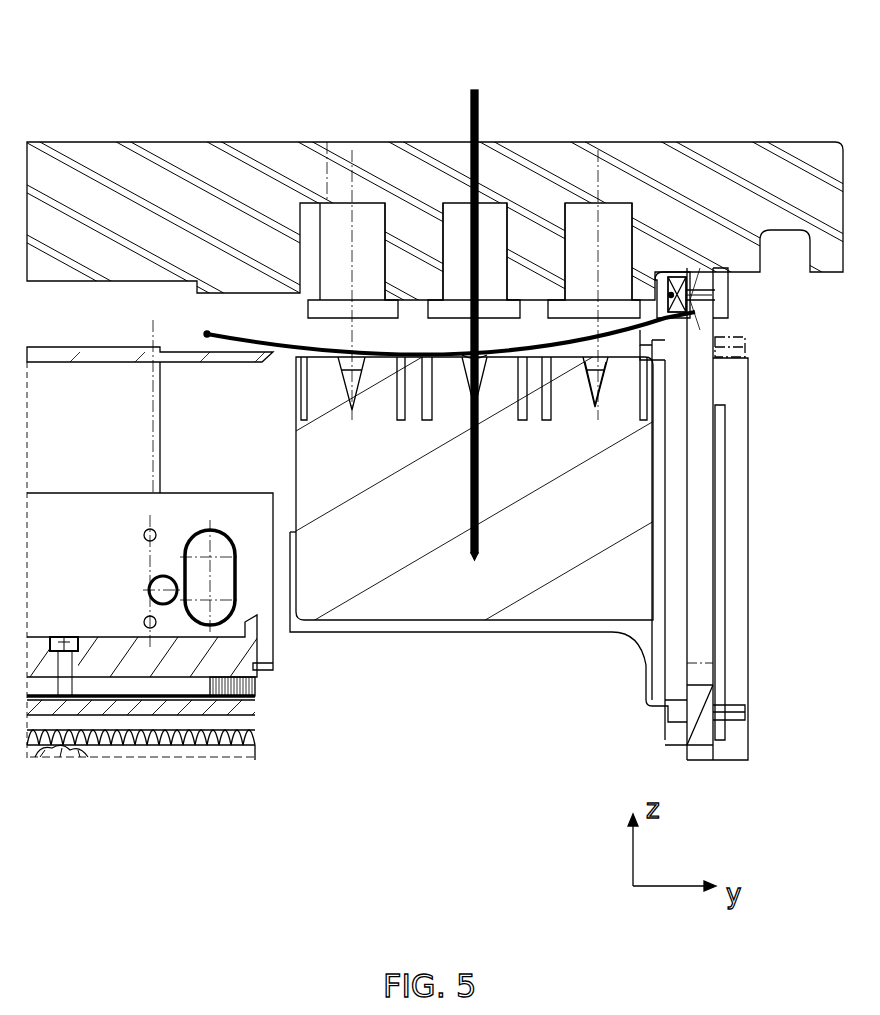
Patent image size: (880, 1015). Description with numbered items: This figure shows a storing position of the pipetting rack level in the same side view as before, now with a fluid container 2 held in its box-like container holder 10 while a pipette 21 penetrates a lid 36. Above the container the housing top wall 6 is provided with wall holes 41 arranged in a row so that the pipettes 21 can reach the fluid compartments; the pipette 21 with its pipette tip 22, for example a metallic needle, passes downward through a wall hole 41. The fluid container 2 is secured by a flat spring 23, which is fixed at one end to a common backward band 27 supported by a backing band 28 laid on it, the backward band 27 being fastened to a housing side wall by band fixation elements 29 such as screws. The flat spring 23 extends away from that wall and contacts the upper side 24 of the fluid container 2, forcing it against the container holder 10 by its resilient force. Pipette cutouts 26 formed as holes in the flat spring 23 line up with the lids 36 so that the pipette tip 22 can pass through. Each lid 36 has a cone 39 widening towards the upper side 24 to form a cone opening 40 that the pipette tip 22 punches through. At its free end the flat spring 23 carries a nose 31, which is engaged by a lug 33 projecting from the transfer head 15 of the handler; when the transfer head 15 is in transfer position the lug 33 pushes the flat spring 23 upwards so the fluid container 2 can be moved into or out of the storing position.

The fluid container 2 is at (390, 550).
The housing top wall 6 is at (147, 152).
The container holder 10 is at (457, 627).
The transfer head 15 is at (108, 592).
The pipette 21 is at (470, 120).
The pipette tip 22 is at (475, 557).
The flat spring 23 is at (567, 400).
The upper side 24 is at (622, 350).
The pipette cutout 26 is at (472, 355).
The backward band 27 is at (688, 310).
The backing band 28 is at (691, 294).
The band fixation element 29 is at (669, 297).
The nose 31 is at (207, 332).
The lug 33 is at (258, 365).
The lid 36 is at (445, 403).
The cone 39 is at (607, 382).
The cone opening 40 is at (594, 405).
The wall hole 41 is at (493, 218).